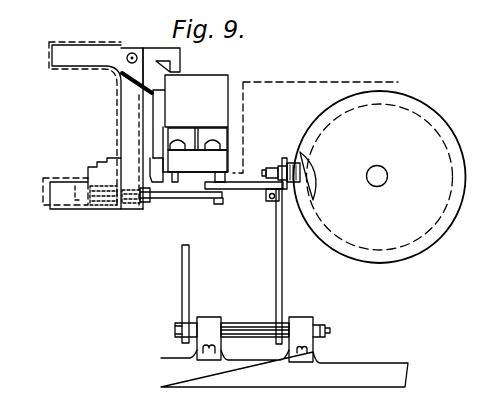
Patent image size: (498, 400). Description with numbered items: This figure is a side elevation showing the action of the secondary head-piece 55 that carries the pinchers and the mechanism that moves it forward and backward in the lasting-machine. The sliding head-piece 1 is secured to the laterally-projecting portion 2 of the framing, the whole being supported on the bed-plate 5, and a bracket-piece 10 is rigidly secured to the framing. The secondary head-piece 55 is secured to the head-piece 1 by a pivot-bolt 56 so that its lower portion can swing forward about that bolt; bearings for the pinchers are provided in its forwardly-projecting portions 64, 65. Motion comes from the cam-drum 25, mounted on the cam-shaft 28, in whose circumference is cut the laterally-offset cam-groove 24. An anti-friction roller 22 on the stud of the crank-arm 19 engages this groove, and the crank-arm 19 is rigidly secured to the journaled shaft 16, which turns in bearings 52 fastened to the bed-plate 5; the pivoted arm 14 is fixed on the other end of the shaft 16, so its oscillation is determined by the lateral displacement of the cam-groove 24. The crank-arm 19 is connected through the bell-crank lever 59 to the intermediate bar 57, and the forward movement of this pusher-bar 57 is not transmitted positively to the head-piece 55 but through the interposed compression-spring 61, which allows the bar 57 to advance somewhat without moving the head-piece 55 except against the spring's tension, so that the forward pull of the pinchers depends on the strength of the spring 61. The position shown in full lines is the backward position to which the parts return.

The head-piece 1 is at (181, 53).
The laterally-projecting portion 2 is at (231, 76).
The bed-plate 5 is at (355, 362).
The bracket-piece 10 is at (31, 190).
The pivoted arm 14 is at (190, 268).
The journaled shaft 16 is at (243, 323).
The crank-arm 19 is at (283, 274).
The anti-friction roller 22 is at (290, 163).
The cam-groove 24 is at (299, 196).
The cam-drum 25 is at (467, 175).
The cam-shaft 28 is at (388, 176).
The bearings 52 is at (255, 339).
The secondary head-piece 55 is at (132, 128).
The pivot-bolt 56 is at (134, 51).
The intermediate bar 57 is at (188, 200).
The bell-crank lever 59 is at (245, 191).
The compression-spring 61 is at (103, 210).
The upper forwardly-projecting portion 64 is at (85, 125).
The lower forwardly-projecting portion 65 is at (93, 193).